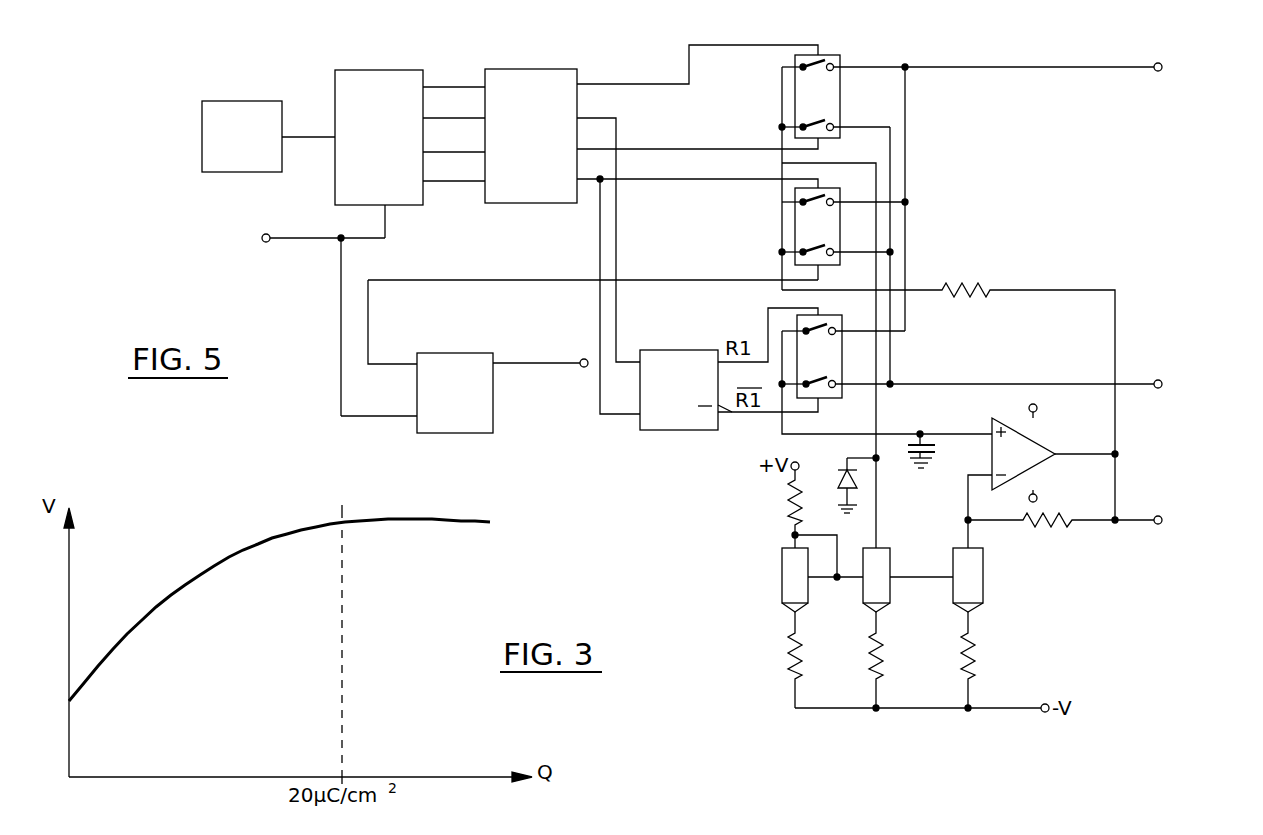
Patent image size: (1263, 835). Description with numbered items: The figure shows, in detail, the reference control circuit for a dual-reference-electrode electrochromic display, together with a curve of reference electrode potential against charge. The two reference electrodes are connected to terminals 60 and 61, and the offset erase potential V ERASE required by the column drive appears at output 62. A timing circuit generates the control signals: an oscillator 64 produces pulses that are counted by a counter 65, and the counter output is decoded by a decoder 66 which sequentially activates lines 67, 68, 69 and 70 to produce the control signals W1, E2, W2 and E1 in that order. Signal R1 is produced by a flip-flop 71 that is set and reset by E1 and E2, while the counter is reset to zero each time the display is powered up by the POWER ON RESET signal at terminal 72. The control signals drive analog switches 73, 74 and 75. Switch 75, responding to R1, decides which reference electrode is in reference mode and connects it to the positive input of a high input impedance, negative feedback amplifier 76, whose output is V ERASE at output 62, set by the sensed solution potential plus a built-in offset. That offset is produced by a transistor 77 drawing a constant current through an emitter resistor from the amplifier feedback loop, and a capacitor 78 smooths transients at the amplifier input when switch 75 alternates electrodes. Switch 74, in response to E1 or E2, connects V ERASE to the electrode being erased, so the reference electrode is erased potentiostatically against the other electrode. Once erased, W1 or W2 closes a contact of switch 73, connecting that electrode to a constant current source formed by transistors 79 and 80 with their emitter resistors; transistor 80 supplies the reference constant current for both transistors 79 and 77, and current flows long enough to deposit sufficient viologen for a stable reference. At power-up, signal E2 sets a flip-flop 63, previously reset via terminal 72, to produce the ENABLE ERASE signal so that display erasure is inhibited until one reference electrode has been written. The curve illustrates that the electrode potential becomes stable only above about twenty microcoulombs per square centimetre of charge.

The terminal 60 is at (1158, 62).
The terminal 61 is at (1158, 380).
The output 62 is at (1158, 516).
The flip-flop 63 is at (465, 353).
The oscillator 64 is at (202, 137).
The counter 65 is at (338, 172).
The decoder 66 is at (505, 203).
The line 67 is at (637, 84).
The line 68 is at (616, 132).
The line 69 is at (730, 149).
The line 70 is at (598, 232).
The flip-flop 71 is at (676, 430).
The terminal 72 is at (268, 234).
The analog switch 73 is at (840, 100).
The analog switch 74 is at (795, 226).
The analog switch 75 is at (828, 398).
The amplifier 76 is at (1012, 418).
The transistor 77 is at (983, 567).
The capacitor 78 is at (930, 456).
The transistor 79 is at (890, 592).
The transistor 80 is at (782, 577).